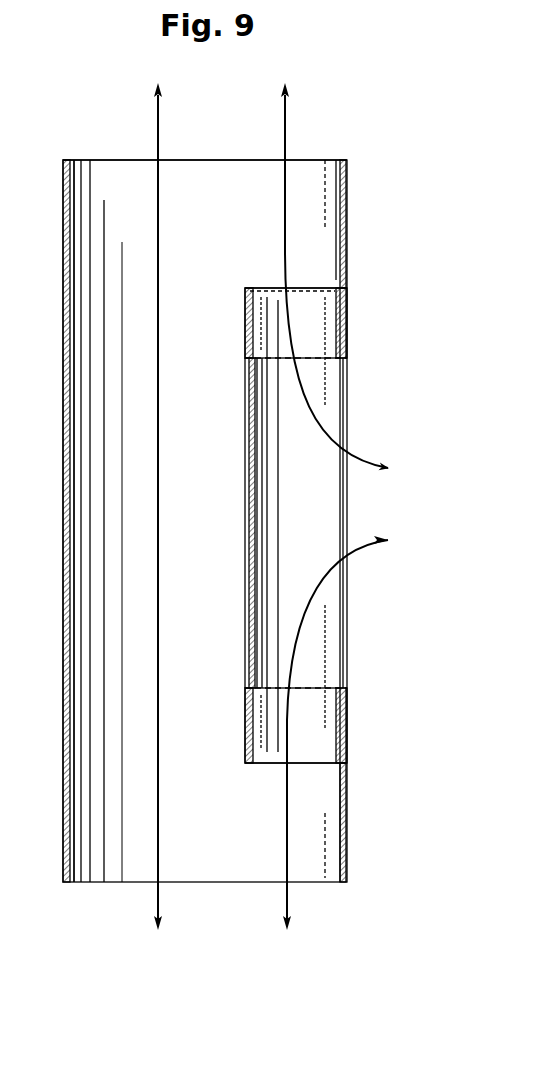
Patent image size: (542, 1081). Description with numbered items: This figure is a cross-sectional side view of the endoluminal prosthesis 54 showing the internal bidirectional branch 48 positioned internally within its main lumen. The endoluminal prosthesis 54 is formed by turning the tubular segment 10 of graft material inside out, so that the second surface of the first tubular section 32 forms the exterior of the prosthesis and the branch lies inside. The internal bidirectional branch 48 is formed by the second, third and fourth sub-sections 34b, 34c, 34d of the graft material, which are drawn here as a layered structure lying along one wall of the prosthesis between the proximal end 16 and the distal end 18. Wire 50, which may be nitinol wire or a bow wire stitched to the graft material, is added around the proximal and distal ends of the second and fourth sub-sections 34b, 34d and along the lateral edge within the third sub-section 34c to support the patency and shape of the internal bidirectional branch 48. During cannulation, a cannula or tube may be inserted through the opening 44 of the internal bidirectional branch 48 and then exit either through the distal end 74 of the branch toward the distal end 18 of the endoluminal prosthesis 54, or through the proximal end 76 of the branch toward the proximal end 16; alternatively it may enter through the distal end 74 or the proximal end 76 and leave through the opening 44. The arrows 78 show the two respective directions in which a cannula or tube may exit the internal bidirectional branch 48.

The tubular segment 10 is at (110, 522).
The proximal end 16 is at (310, 884).
The distal end 18 is at (303, 158).
The first tubular section 32 is at (110, 860).
The second sub-section 34b is at (270, 725).
The third sub-section 34c is at (273, 633).
The fourth sub-section 34d is at (270, 333).
The opening 44 is at (345, 505).
The internal bidirectional branch 48 is at (287, 553).
The wire 50 is at (245, 488).
The endoluminal prosthesis 54 is at (352, 195).
The distal end of the internal bidirectional branch 74 is at (305, 287).
The proximal end of the internal bidirectional branch 76 is at (303, 763).
The arrows 78 is at (307, 400).